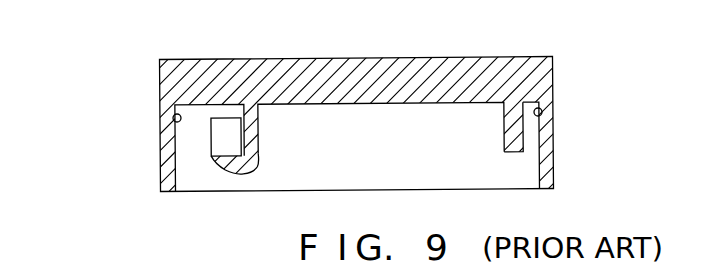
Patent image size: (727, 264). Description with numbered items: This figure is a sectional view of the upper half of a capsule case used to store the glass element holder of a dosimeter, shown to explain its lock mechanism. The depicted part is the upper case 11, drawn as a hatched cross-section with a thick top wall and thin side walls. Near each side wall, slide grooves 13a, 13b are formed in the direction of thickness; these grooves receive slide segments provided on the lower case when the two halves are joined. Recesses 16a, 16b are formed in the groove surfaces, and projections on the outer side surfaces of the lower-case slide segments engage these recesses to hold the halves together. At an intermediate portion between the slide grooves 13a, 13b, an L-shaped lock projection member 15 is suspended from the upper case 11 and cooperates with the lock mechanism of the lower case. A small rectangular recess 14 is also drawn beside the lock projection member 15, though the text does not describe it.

The upper case 11 is at (480, 57).
The slide groove 13a is at (198, 173).
The slide groove 13b is at (528, 168).
The rectangular recess / insert 14 is at (227, 133).
The L-shaped lock projection member 15 is at (256, 168).
The recess 16a is at (172, 110).
The recess 16b is at (540, 109).